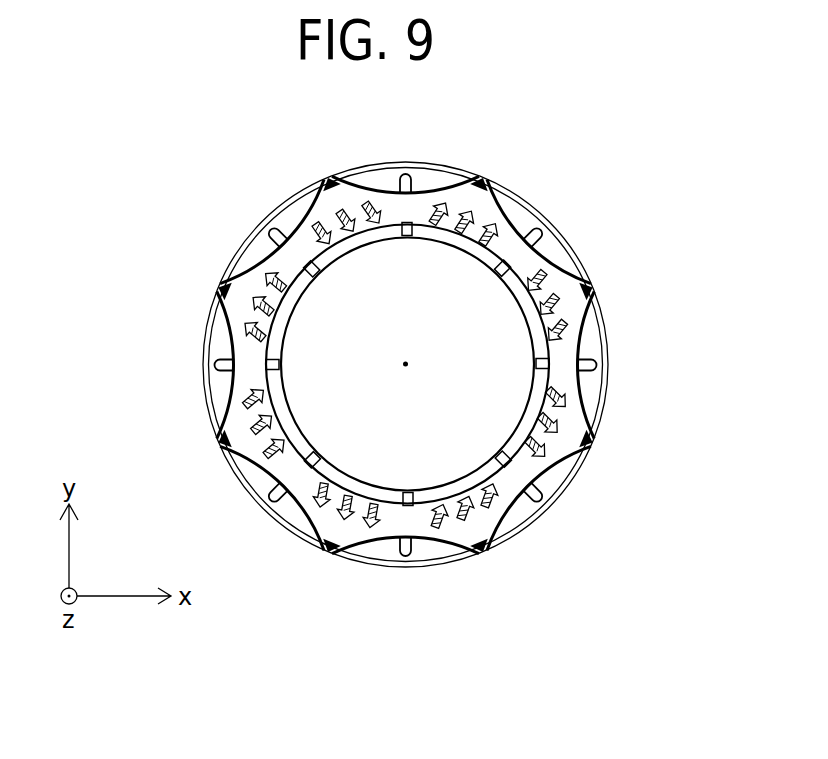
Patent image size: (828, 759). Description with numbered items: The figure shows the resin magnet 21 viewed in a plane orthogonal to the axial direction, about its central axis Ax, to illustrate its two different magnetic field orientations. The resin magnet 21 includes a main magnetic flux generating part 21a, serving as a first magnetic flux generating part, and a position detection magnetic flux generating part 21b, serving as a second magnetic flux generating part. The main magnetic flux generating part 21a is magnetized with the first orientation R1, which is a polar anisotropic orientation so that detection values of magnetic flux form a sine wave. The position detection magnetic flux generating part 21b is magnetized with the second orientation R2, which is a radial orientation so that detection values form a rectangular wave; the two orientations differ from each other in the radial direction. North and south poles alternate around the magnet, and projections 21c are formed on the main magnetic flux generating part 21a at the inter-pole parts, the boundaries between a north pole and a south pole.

The resin magnet 21 is at (178, 184).
The main magnetic flux generating part 21a is at (588, 333).
The position detection magnetic flux generating part 21b is at (555, 395).
The projection 21c is at (405, 177).
The first orientation R1 is at (345, 175).
The second orientation R2 is at (352, 250).
The axis of rotation Ax is at (405, 360).